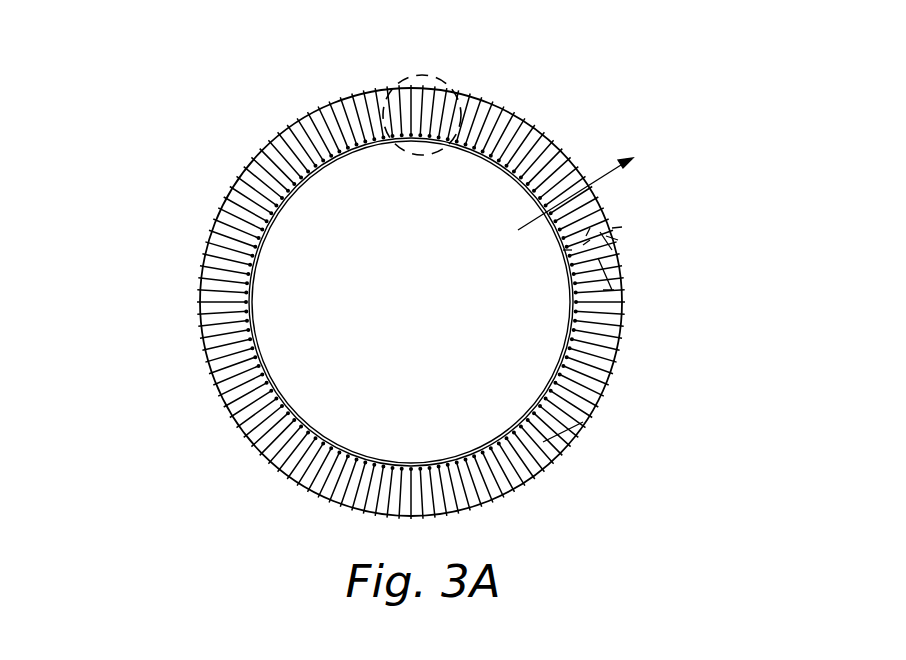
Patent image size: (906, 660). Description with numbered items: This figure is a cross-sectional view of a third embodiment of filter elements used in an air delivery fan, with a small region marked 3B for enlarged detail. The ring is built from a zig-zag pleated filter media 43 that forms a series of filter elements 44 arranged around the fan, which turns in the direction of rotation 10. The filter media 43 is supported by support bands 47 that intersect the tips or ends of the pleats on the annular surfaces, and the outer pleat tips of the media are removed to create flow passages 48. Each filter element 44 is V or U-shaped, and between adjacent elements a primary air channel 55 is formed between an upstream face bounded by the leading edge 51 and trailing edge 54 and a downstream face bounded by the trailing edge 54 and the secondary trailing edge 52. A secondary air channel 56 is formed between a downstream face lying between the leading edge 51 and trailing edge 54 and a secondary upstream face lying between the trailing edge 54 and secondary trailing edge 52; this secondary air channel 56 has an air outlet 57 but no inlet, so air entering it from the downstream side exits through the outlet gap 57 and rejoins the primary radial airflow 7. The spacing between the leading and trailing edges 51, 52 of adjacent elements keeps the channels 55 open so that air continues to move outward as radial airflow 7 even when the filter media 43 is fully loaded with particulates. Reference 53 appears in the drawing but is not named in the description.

The detail region of FIG. 3B is at (415, 72).
The radial airflow 7 is at (606, 176).
The direction of rotation 10 is at (452, 323).
The filter media 43 is at (490, 480).
The filter elements 44 is at (583, 422).
The support bands 47 is at (555, 362).
The flow passages 48 is at (610, 348).
The leading edge 51 is at (603, 230).
The secondary trailing edge 52 is at (612, 233).
The joint 53 is at (596, 256).
The trailing edge 54 is at (583, 245).
The primary air channel 55 is at (563, 250).
The secondary air channel 56 is at (590, 228).
The air outlet 57 is at (612, 228).